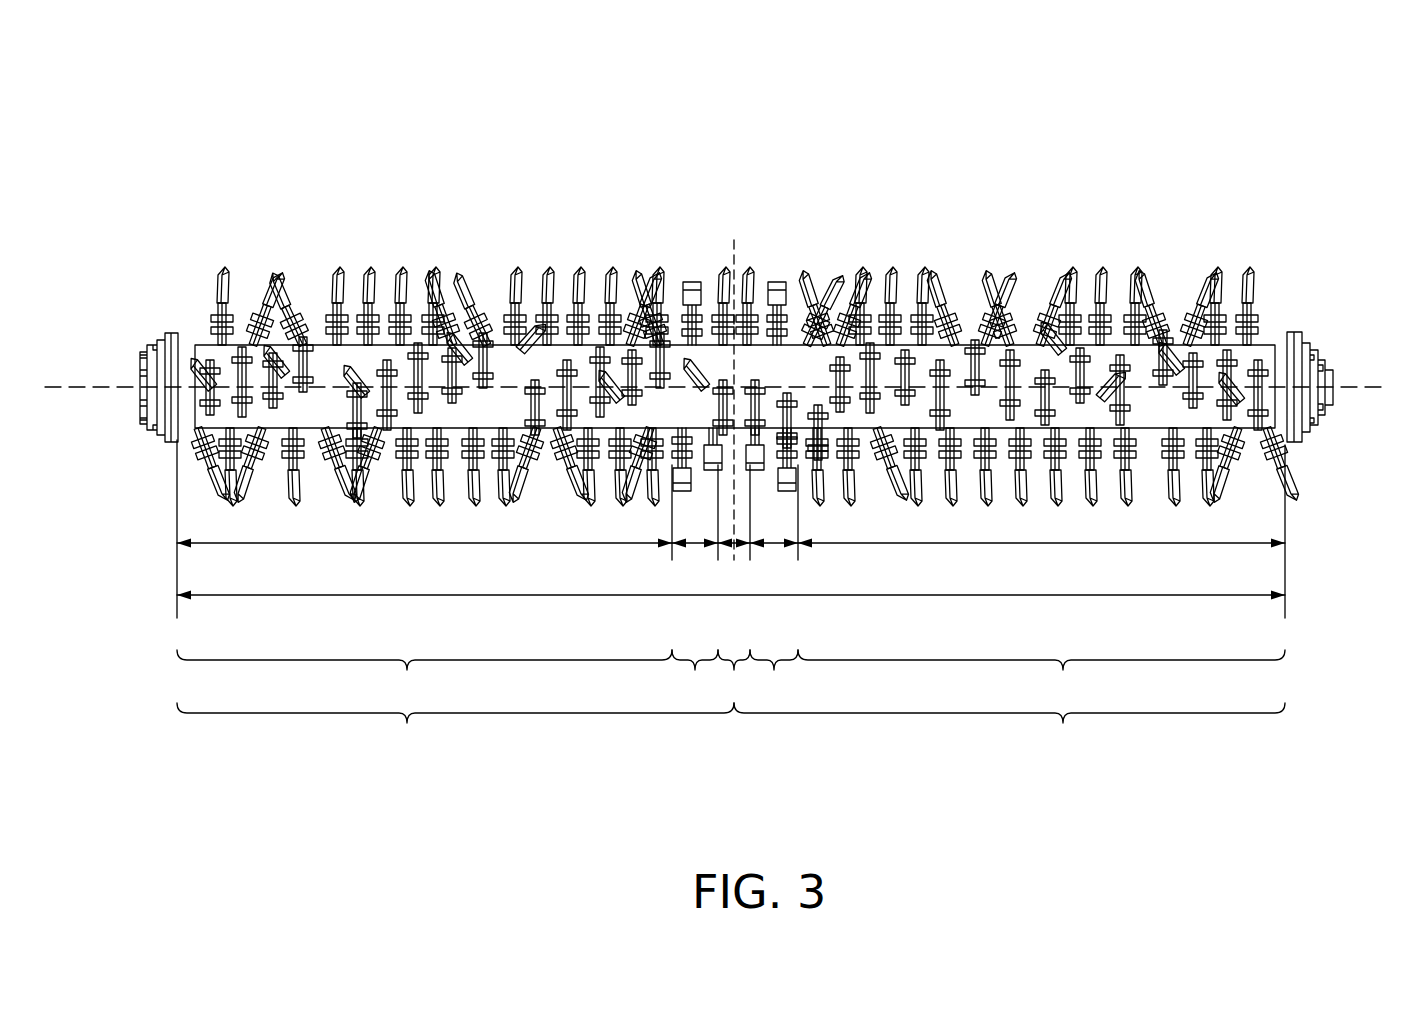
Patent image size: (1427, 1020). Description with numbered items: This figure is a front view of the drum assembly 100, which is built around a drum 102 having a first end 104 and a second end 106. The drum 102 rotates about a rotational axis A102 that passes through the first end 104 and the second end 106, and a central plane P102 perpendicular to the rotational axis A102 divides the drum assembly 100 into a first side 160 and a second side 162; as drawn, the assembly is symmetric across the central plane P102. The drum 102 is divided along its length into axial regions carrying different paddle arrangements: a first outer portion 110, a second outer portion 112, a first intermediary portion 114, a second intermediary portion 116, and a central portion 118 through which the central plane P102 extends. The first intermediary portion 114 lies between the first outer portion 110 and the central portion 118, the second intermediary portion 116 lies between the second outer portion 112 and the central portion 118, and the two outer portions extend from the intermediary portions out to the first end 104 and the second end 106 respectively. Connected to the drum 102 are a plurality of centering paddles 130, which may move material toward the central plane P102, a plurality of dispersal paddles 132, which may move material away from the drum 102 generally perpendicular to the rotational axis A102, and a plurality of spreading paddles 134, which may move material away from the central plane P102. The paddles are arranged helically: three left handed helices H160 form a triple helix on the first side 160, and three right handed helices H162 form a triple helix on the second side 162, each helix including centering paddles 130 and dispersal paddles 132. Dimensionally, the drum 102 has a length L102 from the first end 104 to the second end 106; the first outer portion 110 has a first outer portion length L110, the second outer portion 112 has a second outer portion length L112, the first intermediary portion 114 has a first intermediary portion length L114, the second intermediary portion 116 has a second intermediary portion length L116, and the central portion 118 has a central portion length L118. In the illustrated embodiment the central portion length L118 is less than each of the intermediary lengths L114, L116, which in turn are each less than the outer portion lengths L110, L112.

The drum assembly 100 is at (766, 133).
The drum 102 is at (968, 388).
The first end 104 is at (176, 335).
The second end 106 is at (1288, 372).
The first outer portion 110 is at (424, 680).
The second outer portion 112 is at (1041, 680).
The first intermediary portion 114 is at (688, 676).
The second intermediary portion 116 is at (782, 676).
The central portion 118 is at (733, 676).
The centering paddles 130 is at (482, 300).
The dispersal paddles 132 is at (683, 470).
The spreading paddles 134 is at (748, 272).
The first side 160 is at (455, 738).
The second side 162 is at (1009, 738).
The left handed helices H160 is at (188, 438).
The right handed helices H162 is at (1285, 428).
The length L102 is at (580, 599).
The first outer portion length L110 is at (408, 548).
The second outer portion length L112 is at (1063, 548).
The first intermediary portion length L114 is at (693, 548).
The second intermediary portion length L116 is at (773, 550).
The central portion length L118 is at (740, 550).
The central plane P102 is at (752, 300).
The rotational axis A102 is at (1382, 388).